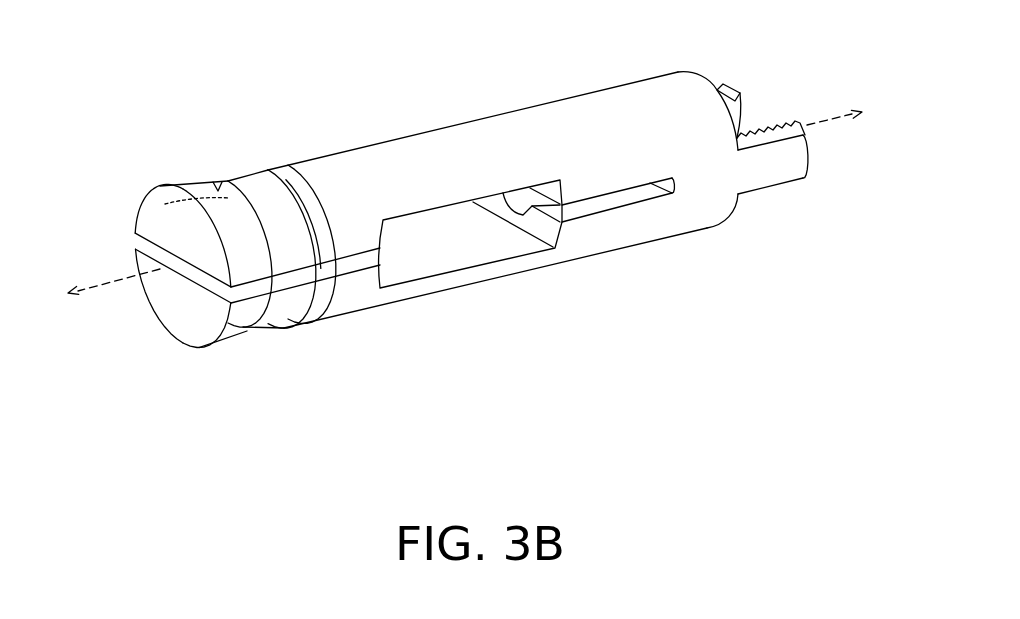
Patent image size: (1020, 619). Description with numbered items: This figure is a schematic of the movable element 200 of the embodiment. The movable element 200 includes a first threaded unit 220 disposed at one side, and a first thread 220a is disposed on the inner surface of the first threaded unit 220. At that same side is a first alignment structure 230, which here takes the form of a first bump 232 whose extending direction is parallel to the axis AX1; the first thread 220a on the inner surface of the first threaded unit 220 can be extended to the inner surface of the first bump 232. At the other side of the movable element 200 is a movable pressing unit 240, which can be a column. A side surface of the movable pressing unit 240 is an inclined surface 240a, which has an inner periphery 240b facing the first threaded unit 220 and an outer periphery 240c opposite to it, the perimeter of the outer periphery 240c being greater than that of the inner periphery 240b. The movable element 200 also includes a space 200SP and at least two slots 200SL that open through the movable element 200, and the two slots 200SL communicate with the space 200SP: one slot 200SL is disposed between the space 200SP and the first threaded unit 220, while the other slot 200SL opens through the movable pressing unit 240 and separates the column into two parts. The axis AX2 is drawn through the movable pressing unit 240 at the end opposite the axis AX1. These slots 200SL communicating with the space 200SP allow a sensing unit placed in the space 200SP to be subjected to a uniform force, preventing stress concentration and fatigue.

The movable element 200 is at (315, 62).
The first threaded unit 220 is at (519, 192).
The first thread 220a is at (668, 106).
The first alignment structure 230 is at (780, 78).
The first bump 232 is at (783, 123).
The movable pressing unit 240 is at (205, 178).
The inclined surface 240a is at (219, 188).
The inner periphery 240b is at (245, 200).
The outer periphery 240c is at (165, 204).
The slots 200SL is at (345, 264).
The space 200SP is at (445, 238).
The axis AX1 is at (858, 107).
The second axis AX2 is at (107, 312).